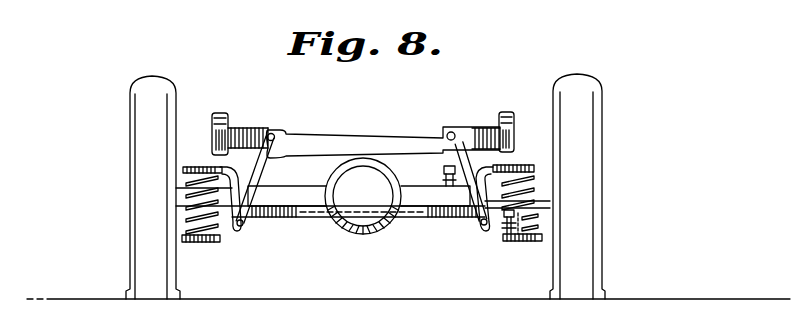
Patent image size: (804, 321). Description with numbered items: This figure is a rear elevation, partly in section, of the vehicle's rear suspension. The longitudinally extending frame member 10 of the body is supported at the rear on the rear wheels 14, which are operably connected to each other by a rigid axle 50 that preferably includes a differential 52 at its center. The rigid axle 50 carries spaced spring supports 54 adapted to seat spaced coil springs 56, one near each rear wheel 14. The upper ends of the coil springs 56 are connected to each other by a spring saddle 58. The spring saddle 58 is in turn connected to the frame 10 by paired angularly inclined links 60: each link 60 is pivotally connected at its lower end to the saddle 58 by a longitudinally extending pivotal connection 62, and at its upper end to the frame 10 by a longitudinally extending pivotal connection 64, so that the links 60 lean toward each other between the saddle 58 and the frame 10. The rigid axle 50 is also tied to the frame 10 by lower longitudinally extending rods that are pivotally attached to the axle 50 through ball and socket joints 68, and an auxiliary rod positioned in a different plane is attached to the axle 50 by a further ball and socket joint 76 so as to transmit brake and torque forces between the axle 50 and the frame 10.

The frame member 10 is at (229, 118).
The rear wheels 14 is at (157, 89).
The rigid axle 50 is at (308, 200).
The differential 52 is at (379, 192).
The spring supports 54 is at (205, 243).
The coil springs 56 is at (183, 222).
The spring saddle 58 is at (199, 167).
The angularly inclined links 60 is at (268, 163).
The pivotal connections 62 is at (238, 231).
The pivotal connections 64 is at (276, 136).
The ball and socket joints 68 is at (502, 228).
The ball and socket joint 76 is at (446, 167).